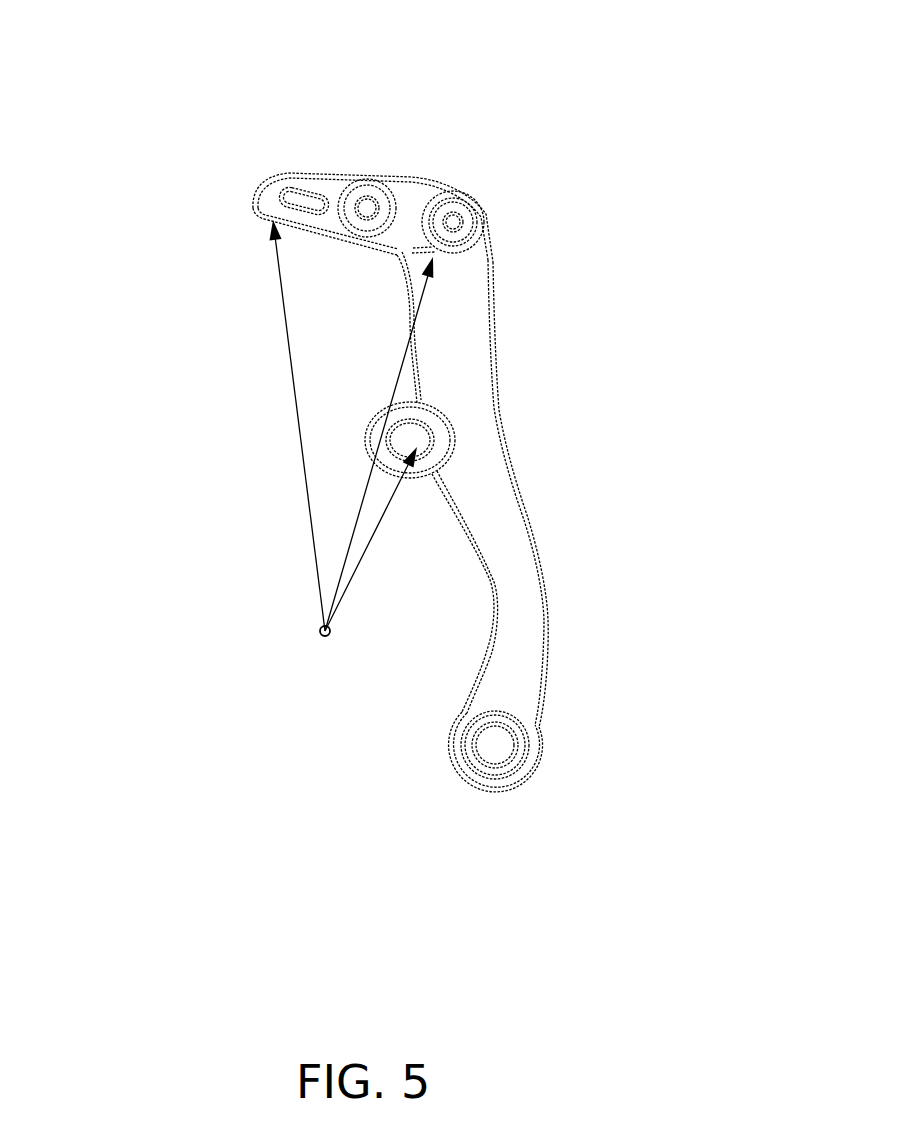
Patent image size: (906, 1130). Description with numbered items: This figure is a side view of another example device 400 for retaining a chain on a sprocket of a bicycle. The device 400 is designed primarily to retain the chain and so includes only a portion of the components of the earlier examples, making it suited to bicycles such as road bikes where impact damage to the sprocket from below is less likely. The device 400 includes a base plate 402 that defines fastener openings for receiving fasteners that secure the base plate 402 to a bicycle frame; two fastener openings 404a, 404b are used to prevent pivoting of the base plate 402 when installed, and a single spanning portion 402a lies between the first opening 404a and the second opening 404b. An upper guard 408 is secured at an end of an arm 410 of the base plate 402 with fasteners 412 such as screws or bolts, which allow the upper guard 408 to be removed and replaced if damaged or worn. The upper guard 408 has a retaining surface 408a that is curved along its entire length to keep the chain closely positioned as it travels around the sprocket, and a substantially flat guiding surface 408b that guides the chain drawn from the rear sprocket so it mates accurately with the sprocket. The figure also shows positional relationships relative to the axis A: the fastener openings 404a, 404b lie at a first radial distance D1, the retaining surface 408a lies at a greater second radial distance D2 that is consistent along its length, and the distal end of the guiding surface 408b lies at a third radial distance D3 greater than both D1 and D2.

The device 400 is at (598, 323).
The base plate 402 is at (512, 577).
The spanning portion 402a is at (523, 663).
The first fastener opening 404a is at (432, 446).
The second fastener opening 404b is at (512, 744).
The upper guard 408 is at (412, 195).
The retaining surface 408a is at (452, 270).
The guiding surface 408b is at (310, 254).
The arm 410 is at (458, 344).
The fasteners 412 is at (364, 200).
The axis A is at (319, 632).
The first radial distance D1 is at (367, 547).
The second radial distance D2 is at (410, 340).
The third radial distance D3 is at (301, 442).